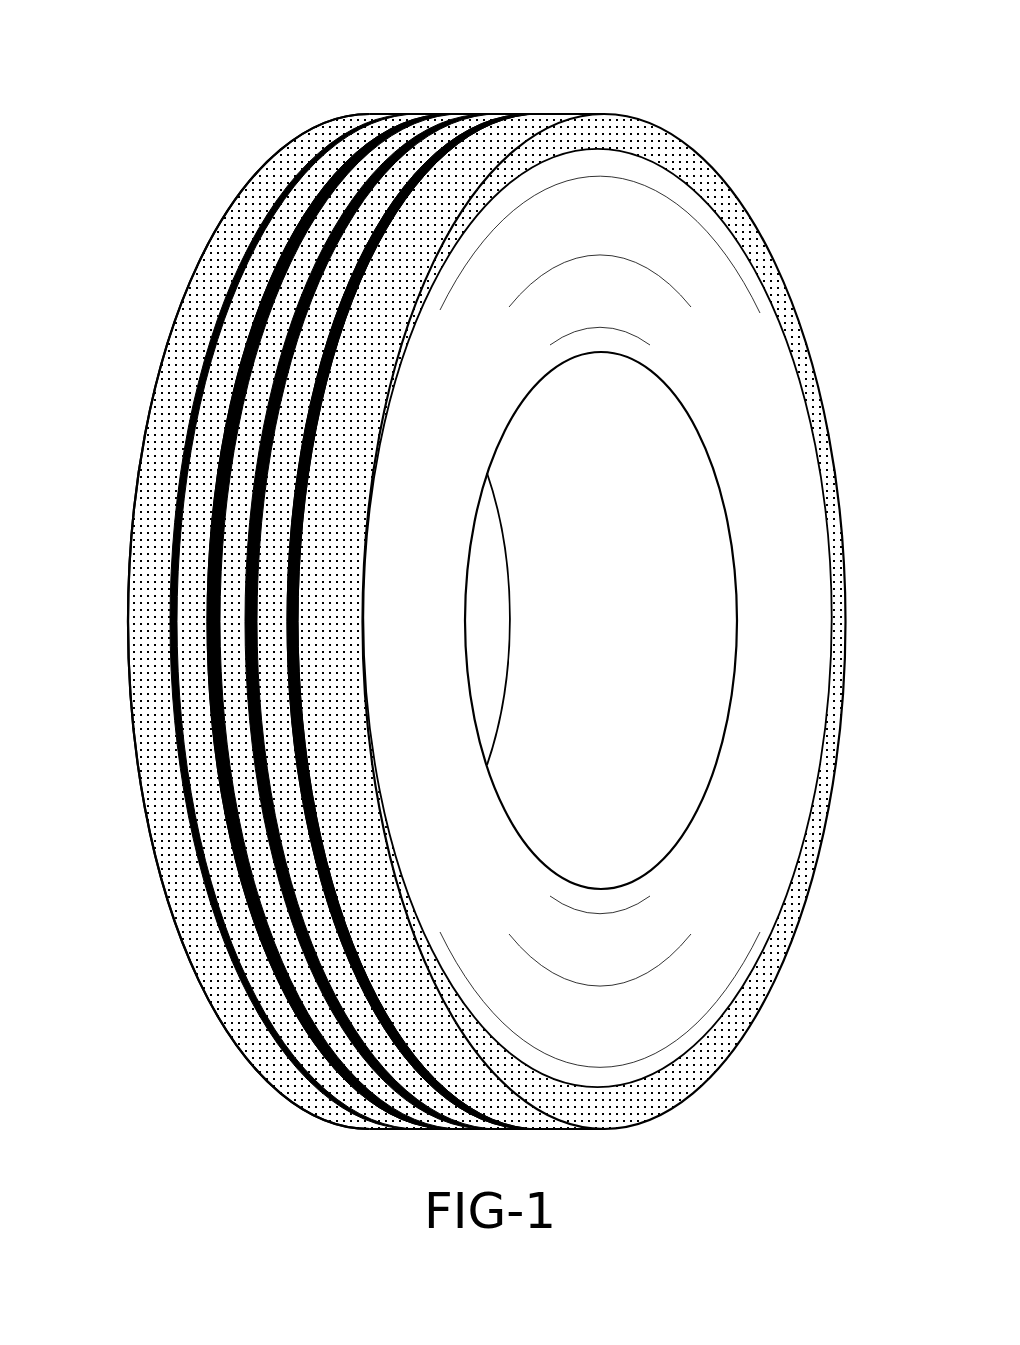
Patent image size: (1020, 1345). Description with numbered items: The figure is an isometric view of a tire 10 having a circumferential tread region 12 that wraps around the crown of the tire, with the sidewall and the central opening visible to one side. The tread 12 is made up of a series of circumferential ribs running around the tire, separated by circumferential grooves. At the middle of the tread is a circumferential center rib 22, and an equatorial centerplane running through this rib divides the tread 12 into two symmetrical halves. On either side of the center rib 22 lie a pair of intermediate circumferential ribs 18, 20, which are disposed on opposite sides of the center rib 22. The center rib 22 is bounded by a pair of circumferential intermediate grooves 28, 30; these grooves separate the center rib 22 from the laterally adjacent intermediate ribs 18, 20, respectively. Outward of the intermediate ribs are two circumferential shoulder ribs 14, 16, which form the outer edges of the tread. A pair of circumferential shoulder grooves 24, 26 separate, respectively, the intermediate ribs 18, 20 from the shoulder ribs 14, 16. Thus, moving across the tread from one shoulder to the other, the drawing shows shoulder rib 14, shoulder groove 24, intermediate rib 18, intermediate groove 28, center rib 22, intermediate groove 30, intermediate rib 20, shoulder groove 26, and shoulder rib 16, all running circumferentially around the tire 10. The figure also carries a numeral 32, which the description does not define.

The tire 10 is at (126, 122).
The circumferential tread region 12 is at (154, 820).
The circumferential shoulder rib 14 is at (150, 695).
The circumferential shoulder rib 16 is at (318, 705).
The intermediate circumferential rib 18 is at (216, 470).
The intermediate circumferential rib 20 is at (264, 544).
The circumferential center rib 22 is at (247, 523).
The circumferential shoulder groove 24 is at (190, 422).
The circumferential shoulder groove 26 is at (300, 483).
The circumferential intermediate groove 28 is at (244, 372).
The circumferential intermediate groove 30 is at (272, 370).
The zigzag sipe 32 is at (208, 582).